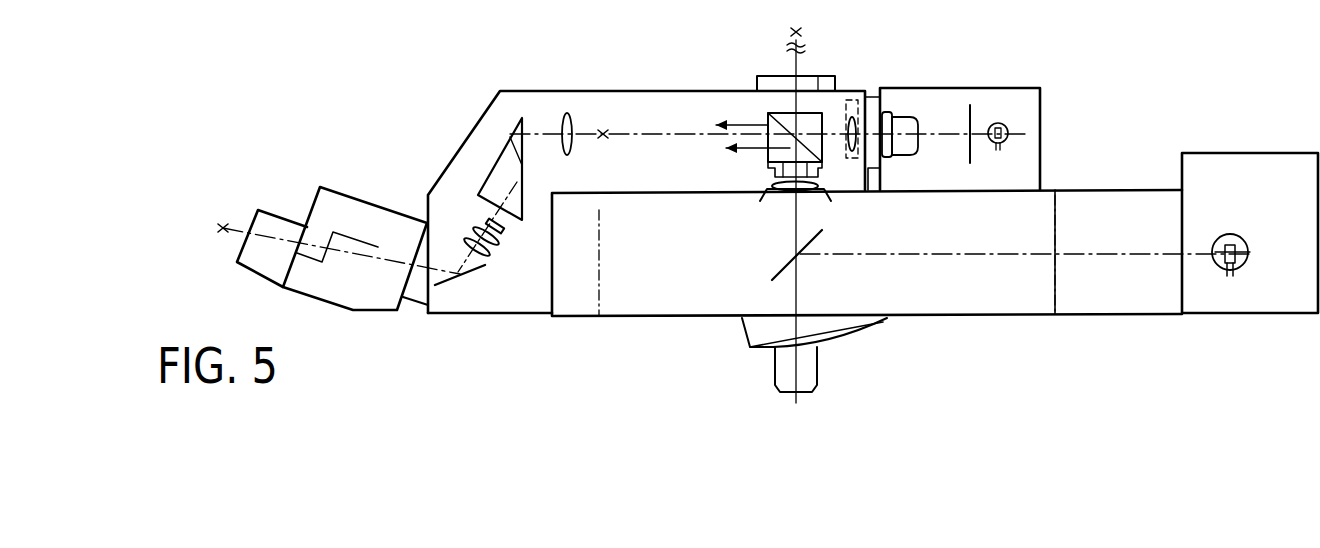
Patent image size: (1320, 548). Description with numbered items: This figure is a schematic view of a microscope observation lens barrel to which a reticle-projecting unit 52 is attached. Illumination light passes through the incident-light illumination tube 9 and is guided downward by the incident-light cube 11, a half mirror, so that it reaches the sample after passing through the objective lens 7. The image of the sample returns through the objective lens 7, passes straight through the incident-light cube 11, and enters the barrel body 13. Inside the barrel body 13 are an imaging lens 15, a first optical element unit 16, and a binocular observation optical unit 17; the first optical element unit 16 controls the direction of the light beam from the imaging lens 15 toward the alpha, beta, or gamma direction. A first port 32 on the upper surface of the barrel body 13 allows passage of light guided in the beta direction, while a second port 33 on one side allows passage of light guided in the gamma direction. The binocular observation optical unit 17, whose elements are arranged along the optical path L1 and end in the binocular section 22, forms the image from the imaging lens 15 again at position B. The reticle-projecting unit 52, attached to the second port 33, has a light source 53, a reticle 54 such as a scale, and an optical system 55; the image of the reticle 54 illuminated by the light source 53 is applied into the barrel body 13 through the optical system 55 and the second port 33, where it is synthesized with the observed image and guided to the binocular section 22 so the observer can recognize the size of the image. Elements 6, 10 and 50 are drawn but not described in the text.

The mount 6 is at (755, 333).
The objective lens 7 is at (803, 367).
The incident-light illumination tube 9 is at (1112, 300).
The lamp 10 is at (1230, 235).
The incident-light cube 11 is at (785, 260).
The barrel body 13 is at (668, 108).
The imaging lens 15 is at (773, 182).
The first optical element unit 16 is at (767, 121).
The binocular observation optical unit 17 is at (483, 144).
The binocular section 22 is at (362, 215).
The first port 32 is at (757, 83).
The second port 33 is at (872, 170).
The lens group 50 is at (888, 112).
The reticle-projecting unit 52 is at (1068, 160).
The light source 53 is at (1008, 130).
The reticle 54 is at (972, 100).
The optical system 55 is at (907, 117).
The axis A is at (603, 140).
The position B is at (223, 226).
The optical path L1 is at (641, 133).